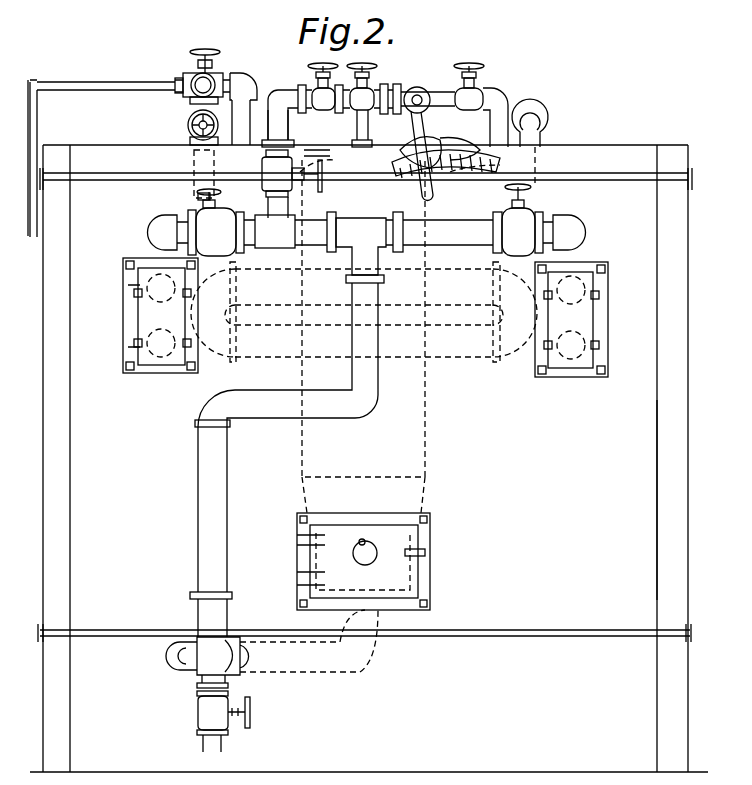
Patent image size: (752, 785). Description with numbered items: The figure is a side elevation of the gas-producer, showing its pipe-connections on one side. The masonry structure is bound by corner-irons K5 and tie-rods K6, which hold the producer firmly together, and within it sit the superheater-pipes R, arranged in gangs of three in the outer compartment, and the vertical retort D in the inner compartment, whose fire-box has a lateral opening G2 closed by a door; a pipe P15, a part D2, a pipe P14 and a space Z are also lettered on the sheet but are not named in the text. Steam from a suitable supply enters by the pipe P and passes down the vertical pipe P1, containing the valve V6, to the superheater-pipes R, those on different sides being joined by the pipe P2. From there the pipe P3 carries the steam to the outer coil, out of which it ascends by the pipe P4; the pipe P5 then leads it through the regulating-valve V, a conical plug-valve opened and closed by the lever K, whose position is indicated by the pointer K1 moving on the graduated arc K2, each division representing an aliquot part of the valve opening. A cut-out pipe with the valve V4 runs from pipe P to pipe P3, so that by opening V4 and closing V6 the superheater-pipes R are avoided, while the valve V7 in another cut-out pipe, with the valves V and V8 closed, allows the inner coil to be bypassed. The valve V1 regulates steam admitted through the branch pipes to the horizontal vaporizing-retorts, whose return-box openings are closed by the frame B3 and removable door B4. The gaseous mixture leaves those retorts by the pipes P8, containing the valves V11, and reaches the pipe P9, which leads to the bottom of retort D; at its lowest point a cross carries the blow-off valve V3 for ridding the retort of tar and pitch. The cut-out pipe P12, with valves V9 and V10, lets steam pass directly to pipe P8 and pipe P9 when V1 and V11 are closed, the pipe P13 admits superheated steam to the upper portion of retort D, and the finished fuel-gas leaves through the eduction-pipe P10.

The tie-rods K6 is at (369, 458).
The corner-irons K5 is at (661, 500).
The supply pipe P15 is at (101, 145).
The valve V4 is at (199, 65).
The vertical pipe P1 is at (170, 98).
The valve V6 is at (189, 155).
The steam-supply pipe P is at (240, 99).
The pipe P3 is at (349, 100).
The valve V9 is at (319, 77).
The valve V8 is at (371, 94).
The pipe P5 is at (414, 93).
The regulating-valve V is at (411, 91).
The lever K is at (445, 156).
The pointer K1 is at (446, 145).
The graduated arc K2 is at (476, 158).
The valve V7 is at (485, 78).
The pipe P4 is at (505, 112).
The pipe P2 is at (542, 135).
The valve V10 is at (278, 179).
The cut-out pipe P12 is at (300, 125).
The eduction-pipe P10 is at (325, 144).
The chamber wall D2 is at (336, 163).
The pipe P8 is at (367, 232).
The valve V11 is at (366, 220).
The valve V1 is at (361, 250).
The pipe P9 is at (300, 477).
The pipe P13 is at (199, 656).
The pipe branch P14 is at (219, 656).
The valve V3 is at (223, 713).
The frame B3 is at (365, 317).
The door B4 is at (357, 316).
The superheater-pipes R is at (364, 312).
The vertical retort D is at (363, 336).
The lateral opening G2 is at (363, 561).
The space Z is at (533, 535).